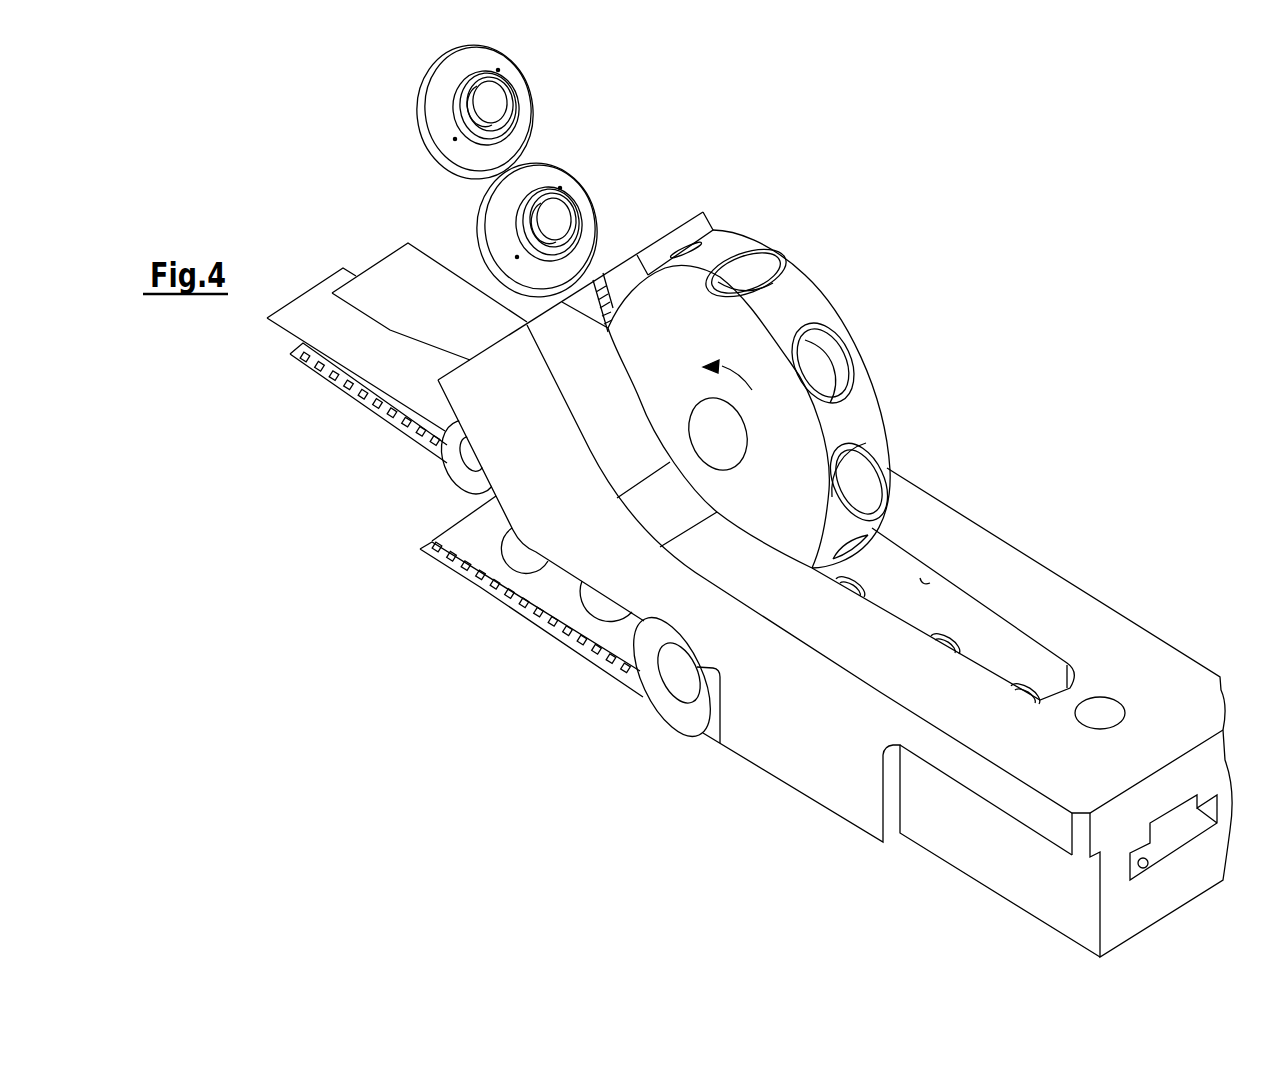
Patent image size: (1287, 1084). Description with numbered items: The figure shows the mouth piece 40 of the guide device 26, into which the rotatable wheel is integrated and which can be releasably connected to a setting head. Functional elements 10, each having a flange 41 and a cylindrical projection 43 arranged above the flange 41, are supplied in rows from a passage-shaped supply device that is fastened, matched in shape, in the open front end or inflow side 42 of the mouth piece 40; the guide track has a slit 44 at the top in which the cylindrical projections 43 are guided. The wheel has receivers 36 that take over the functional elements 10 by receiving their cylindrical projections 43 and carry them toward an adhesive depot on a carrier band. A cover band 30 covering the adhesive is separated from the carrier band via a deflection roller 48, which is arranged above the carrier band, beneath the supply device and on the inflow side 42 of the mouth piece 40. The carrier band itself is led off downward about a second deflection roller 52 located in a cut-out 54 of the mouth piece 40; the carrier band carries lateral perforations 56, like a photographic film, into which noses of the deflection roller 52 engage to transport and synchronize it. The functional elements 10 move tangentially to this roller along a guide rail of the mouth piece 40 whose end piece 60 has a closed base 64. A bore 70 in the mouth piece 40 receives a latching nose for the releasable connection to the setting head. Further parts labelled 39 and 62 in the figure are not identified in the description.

The functional elements 10 is at (564, 210).
The guide device 26 is at (472, 398).
The cover band 30 is at (300, 312).
The receivers 36 is at (745, 275).
The wheel 39 is at (765, 360).
The mouth piece 40 is at (929, 714).
The flanges 41 is at (478, 66).
The inflow side 42 is at (526, 397).
The cylindrical projections 43 is at (580, 218).
The slit 44 is at (927, 582).
The deflection roller 48 is at (463, 477).
The deflection roller 52 is at (675, 713).
The cut-out 54 is at (720, 743).
The lateral perforations 56 is at (335, 387).
The end piece 60 is at (1167, 845).
The screws 62 is at (1015, 685).
The closed base 64 is at (1152, 866).
The bore 70 is at (1105, 712).